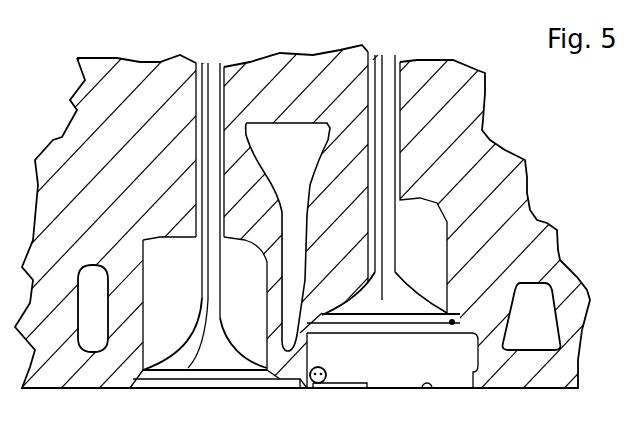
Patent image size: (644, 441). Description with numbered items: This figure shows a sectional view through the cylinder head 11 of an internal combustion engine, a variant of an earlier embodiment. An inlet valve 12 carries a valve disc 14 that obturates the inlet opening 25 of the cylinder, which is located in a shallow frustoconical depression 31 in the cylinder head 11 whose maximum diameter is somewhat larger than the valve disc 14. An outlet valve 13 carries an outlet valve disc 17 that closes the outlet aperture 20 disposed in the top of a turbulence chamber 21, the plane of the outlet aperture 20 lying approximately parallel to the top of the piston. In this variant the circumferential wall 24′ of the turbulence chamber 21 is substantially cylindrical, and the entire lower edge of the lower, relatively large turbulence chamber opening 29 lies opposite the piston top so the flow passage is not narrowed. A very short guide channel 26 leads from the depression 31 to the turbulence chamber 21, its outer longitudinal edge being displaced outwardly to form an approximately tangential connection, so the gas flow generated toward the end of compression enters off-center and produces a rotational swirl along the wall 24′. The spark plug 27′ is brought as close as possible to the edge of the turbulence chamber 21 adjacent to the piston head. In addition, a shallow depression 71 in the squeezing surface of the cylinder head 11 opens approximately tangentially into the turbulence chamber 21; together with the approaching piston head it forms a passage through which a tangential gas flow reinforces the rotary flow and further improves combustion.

The cylinder head 11 is at (83, 79).
The inlet valve 12 is at (211, 80).
The outlet valve 13 is at (387, 77).
The valve disc 14 is at (208, 373).
The outlet valve disc 17 is at (420, 318).
The outlet aperture 20 is at (450, 323).
The turbulence chamber 21 is at (376, 365).
The circumferential wall 24′ is at (472, 374).
The inlet opening 25 is at (135, 381).
The guide channel 26 is at (300, 378).
The spark plug 27′ is at (330, 372).
The turbulence chamber opening 29 is at (425, 388).
The depression 31 is at (160, 383).
The shallow depression 71 is at (318, 387).